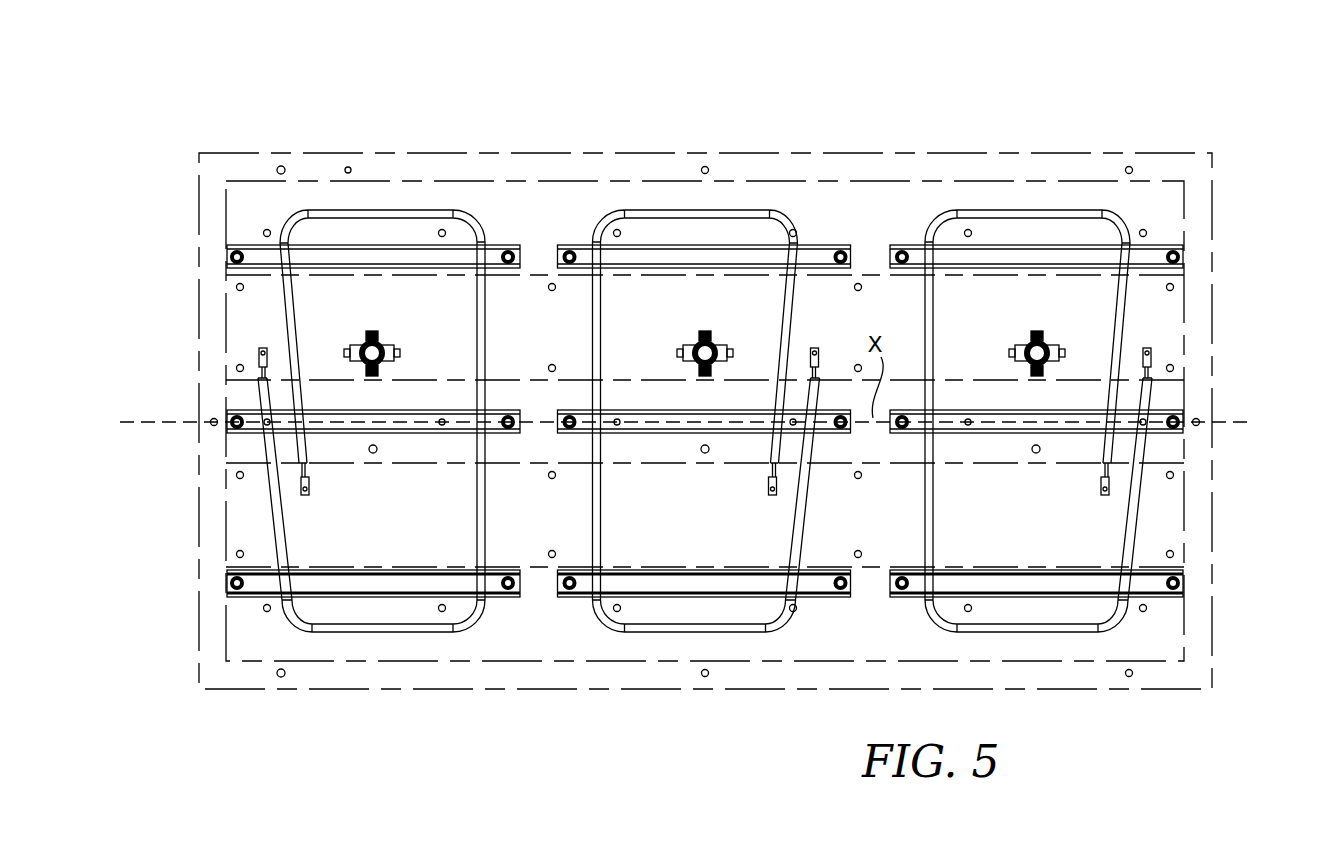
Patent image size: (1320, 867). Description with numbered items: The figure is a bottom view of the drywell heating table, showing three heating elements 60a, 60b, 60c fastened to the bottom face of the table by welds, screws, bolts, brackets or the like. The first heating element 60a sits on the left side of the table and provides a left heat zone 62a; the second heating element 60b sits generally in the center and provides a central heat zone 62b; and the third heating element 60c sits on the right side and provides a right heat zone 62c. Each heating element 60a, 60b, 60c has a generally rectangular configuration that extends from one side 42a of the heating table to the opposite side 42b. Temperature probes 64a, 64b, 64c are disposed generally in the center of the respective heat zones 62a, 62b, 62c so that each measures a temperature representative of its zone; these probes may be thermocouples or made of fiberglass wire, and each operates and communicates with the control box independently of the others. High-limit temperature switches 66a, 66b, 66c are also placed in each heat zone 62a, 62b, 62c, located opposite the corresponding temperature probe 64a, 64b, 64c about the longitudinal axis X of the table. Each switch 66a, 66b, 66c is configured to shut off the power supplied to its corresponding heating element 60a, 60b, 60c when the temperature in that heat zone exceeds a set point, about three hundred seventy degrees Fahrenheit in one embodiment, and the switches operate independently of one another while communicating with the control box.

The side of the heating table 42a is at (211, 698).
The opposite side of the heating table 42b is at (871, 128).
The first heating element 60a is at (381, 652).
The second heating element 60b is at (713, 652).
The third heating element 60c is at (1044, 652).
The left heat zone 62a is at (213, 147).
The central heat zone 62b is at (704, 342).
The right heat zone 62c is at (1033, 342).
The temperature probe 64a is at (373, 458).
The temperature probe 64b is at (705, 458).
The temperature probe 64c is at (1036, 458).
The temperature limit switch 66a is at (385, 340).
The temperature limit switch 66b is at (718, 340).
The temperature limit switch 66c is at (1049, 340).